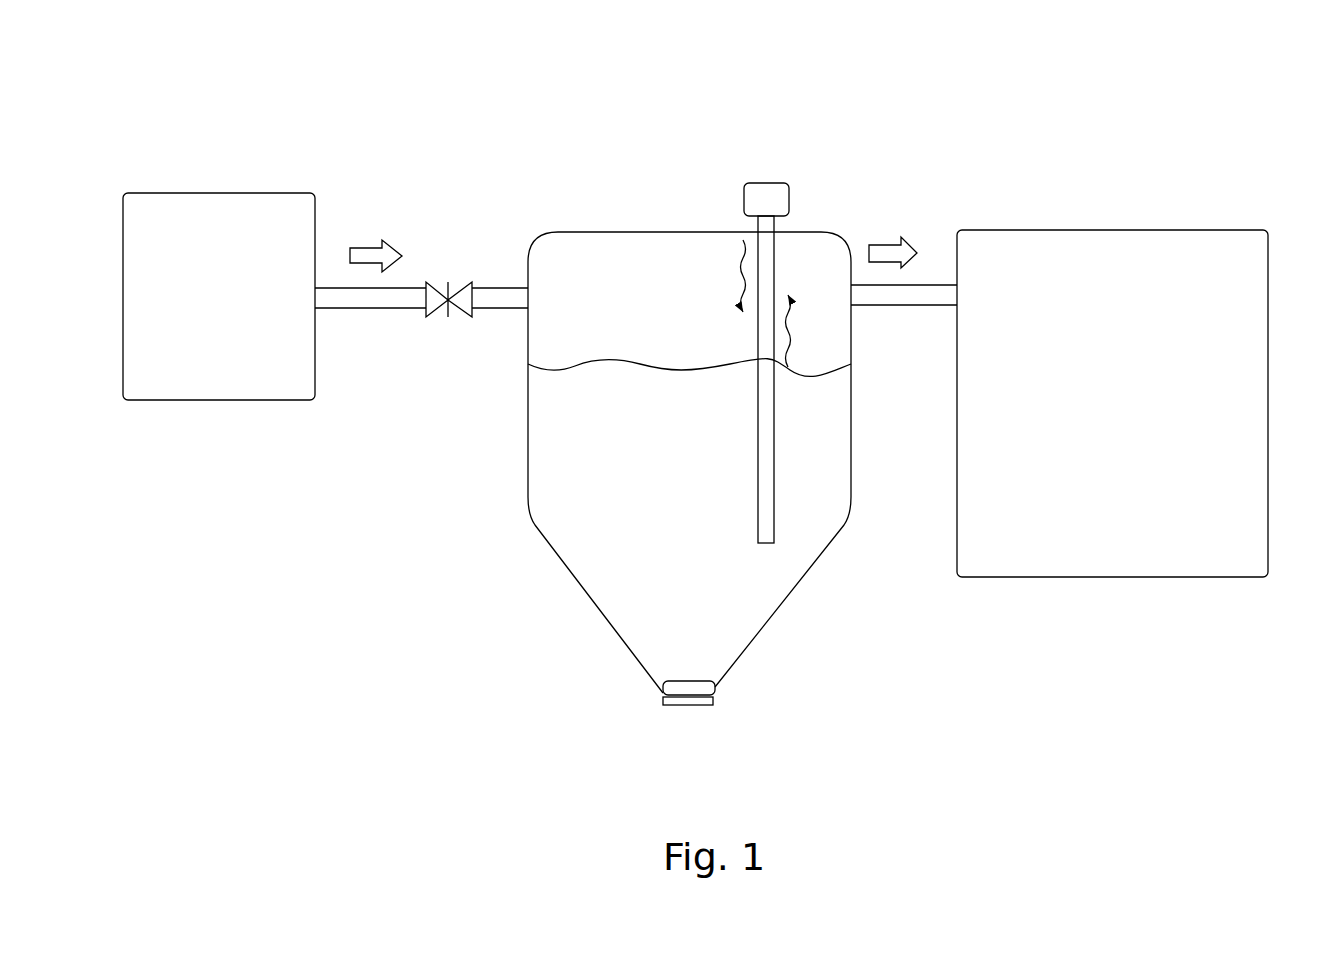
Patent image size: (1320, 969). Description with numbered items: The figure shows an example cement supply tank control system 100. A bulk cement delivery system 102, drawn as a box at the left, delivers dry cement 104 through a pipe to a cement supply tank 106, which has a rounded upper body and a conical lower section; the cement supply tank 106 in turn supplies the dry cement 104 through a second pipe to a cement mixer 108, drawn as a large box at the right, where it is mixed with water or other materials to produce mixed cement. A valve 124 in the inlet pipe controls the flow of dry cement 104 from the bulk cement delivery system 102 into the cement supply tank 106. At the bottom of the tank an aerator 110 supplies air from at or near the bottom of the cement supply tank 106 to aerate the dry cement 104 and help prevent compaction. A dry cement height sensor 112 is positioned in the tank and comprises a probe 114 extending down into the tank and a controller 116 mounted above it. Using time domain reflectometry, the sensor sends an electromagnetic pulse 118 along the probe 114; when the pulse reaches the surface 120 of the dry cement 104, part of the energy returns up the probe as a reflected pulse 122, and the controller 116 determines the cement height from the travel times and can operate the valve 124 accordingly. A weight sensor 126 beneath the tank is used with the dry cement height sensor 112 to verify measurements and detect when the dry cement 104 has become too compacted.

The cement supply tank control system 100 is at (536, 82).
The bulk cement delivery system 102 is at (210, 193).
The dry cement 104 is at (610, 258).
The cement supply tank 106 is at (527, 552).
The cement mixer 108 is at (1125, 232).
The aerator 110 is at (707, 684).
The dry cement height sensor 112 is at (800, 252).
The probe 114 is at (763, 428).
The controller 116 is at (760, 183).
The electromagnetic pulse 118 is at (737, 272).
The surface 120 is at (823, 367).
The reflected pulse 122 is at (790, 333).
The valve 124 is at (447, 321).
The weight sensor 126 is at (677, 707).